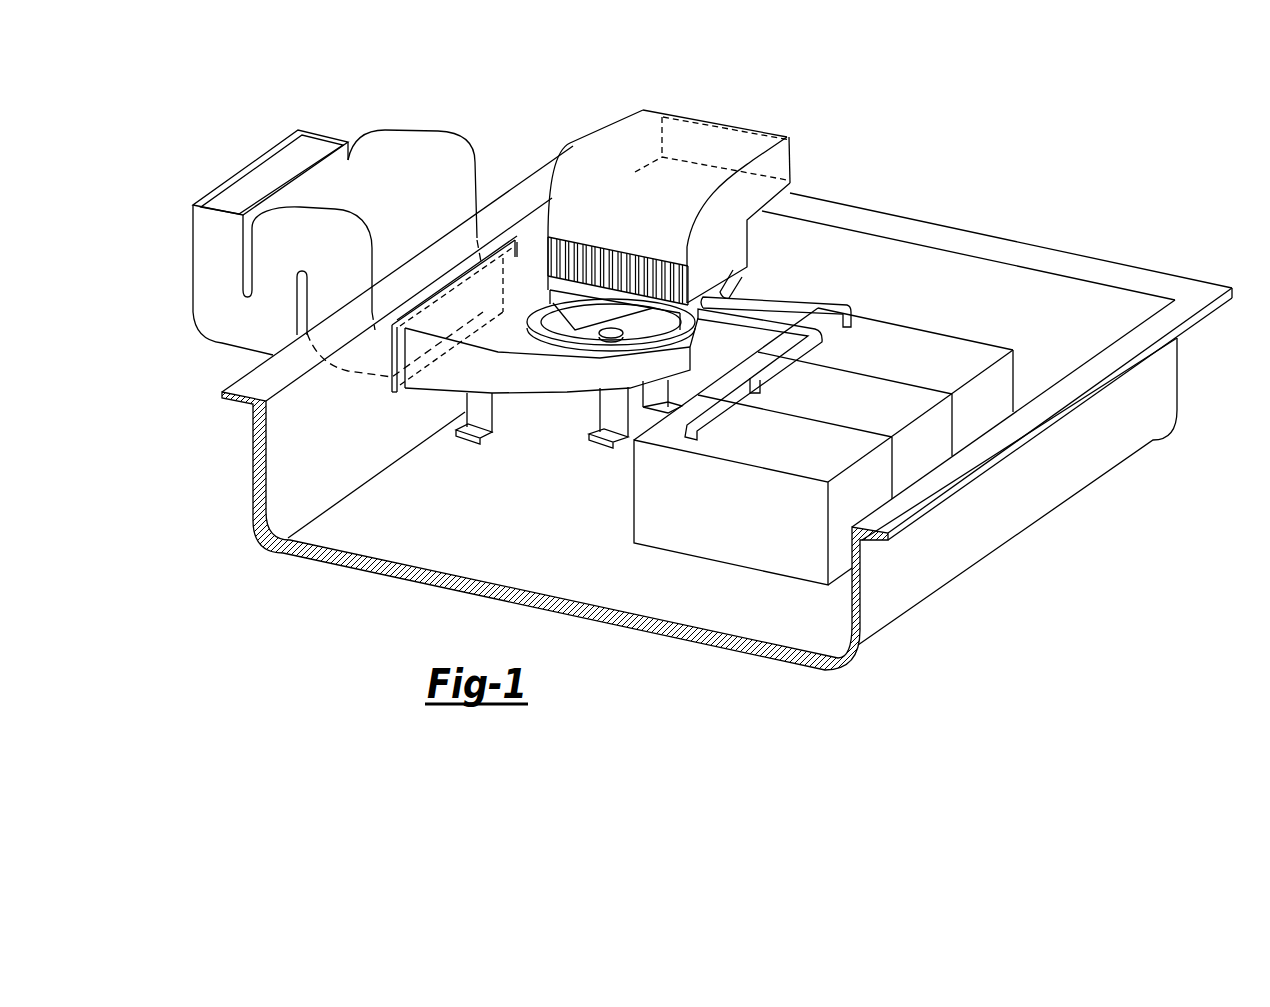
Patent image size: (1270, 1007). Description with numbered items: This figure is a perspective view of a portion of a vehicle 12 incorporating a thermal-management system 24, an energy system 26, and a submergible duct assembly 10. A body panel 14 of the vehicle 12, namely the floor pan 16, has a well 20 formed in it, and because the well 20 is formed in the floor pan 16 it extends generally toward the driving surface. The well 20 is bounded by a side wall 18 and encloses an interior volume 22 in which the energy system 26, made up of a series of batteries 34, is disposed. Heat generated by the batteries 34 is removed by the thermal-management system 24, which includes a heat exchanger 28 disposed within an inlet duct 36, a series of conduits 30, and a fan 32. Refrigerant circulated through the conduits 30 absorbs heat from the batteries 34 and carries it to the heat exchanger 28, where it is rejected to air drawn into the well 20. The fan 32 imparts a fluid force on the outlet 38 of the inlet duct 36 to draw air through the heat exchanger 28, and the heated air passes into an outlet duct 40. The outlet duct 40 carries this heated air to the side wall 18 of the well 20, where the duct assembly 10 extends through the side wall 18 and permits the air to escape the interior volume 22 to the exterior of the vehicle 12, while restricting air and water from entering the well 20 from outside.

The duct assembly 10 is at (411, 137).
The vehicle 12 is at (721, 440).
The body panel 14 is at (897, 608).
The floor pan 16 is at (706, 641).
The side wall 18 is at (296, 455).
The well 20 is at (780, 611).
The interior volume 22 is at (417, 537).
The thermal-management system 24 is at (697, 188).
The energy system 26 is at (858, 438).
The heat exchanger 28 is at (548, 270).
The conduits 30 is at (769, 372).
The fan 32 is at (648, 331).
The batteries 34 is at (798, 455).
The inlet duct 36 is at (688, 157).
The outlet 38 is at (723, 288).
The outlet duct 40 is at (543, 387).